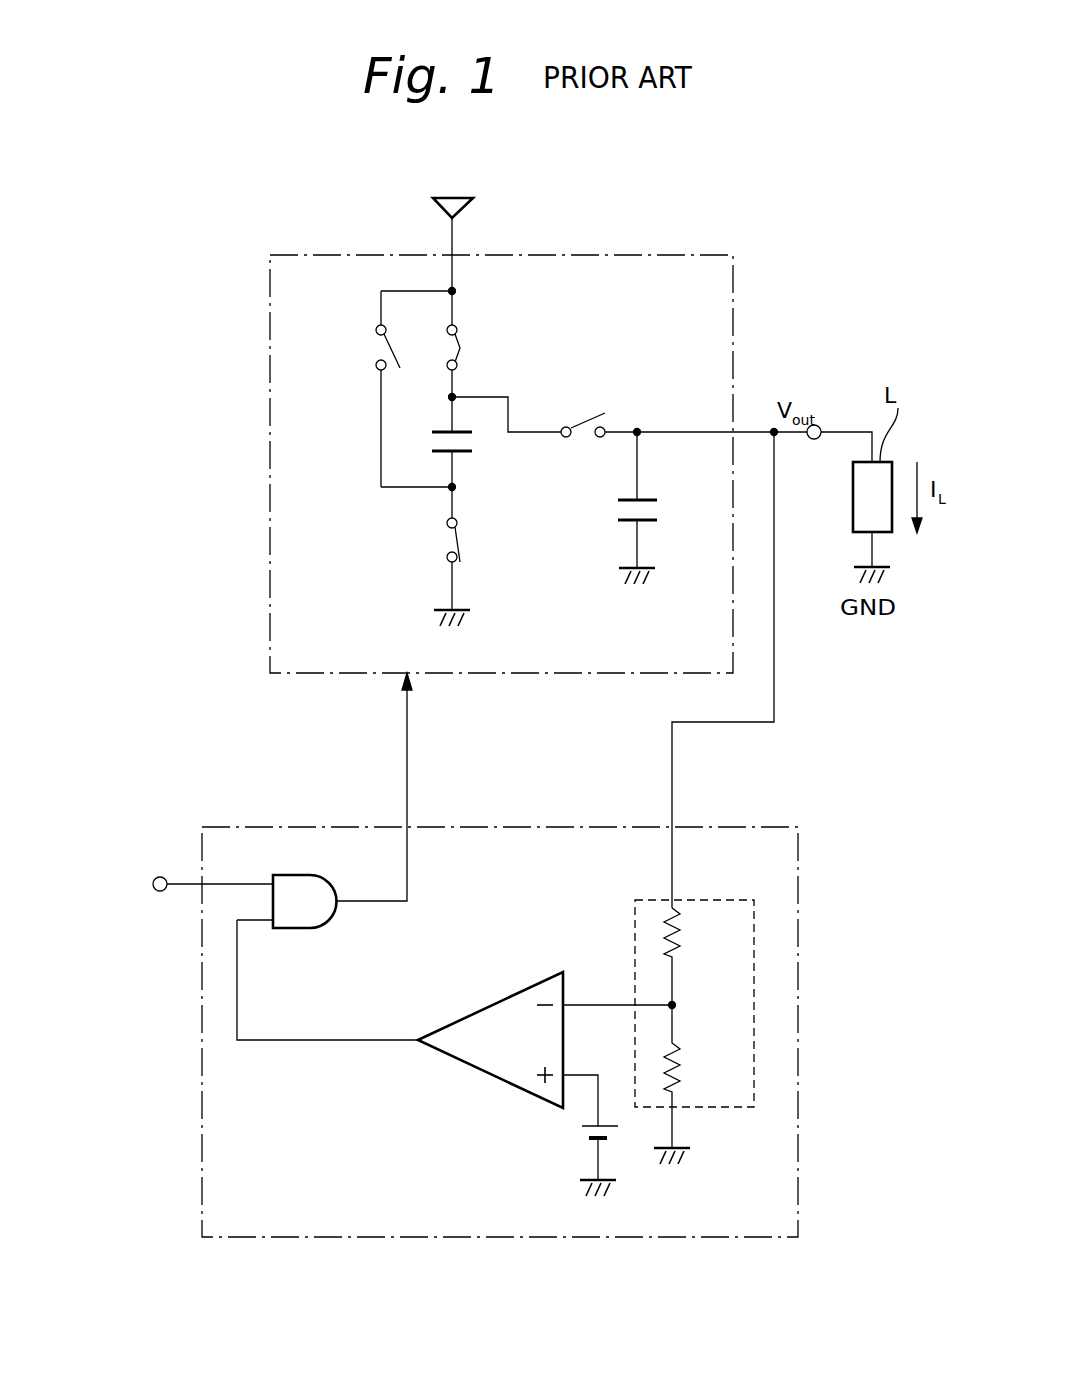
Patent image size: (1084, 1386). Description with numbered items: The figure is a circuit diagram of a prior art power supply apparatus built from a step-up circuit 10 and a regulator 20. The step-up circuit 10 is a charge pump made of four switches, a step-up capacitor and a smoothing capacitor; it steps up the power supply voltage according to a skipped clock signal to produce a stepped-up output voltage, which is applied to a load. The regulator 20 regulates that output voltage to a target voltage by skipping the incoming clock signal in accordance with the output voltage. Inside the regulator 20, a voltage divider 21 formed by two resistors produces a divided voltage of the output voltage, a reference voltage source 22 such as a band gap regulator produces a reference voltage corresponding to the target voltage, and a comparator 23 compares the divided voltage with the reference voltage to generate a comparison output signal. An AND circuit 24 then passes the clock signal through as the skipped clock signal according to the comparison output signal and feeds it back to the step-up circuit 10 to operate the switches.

The step-up circuit 10 is at (616, 254).
The regulator 20 is at (742, 827).
The voltage divider 21 is at (720, 1107).
The reference voltage source 22 is at (583, 1148).
The comparator 23 is at (467, 1063).
The AND circuit 24 is at (307, 873).